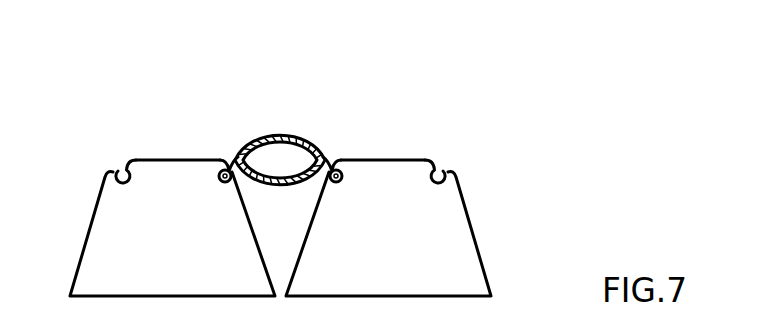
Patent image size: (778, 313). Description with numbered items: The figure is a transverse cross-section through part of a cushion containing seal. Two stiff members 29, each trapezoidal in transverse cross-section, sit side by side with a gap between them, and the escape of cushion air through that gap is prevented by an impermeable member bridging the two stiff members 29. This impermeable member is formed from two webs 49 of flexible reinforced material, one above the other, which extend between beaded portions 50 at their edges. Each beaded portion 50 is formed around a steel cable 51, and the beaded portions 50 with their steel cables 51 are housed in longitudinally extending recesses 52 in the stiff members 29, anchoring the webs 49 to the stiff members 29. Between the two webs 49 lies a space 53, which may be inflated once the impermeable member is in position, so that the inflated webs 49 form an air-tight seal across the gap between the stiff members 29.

The stiff member 29 is at (192, 255).
The web 49 is at (279, 135).
The beaded portion 50 is at (208, 164).
The steel cable 51 is at (342, 168).
The longitudinally extending recess 52 is at (115, 167).
The space 53 is at (297, 176).